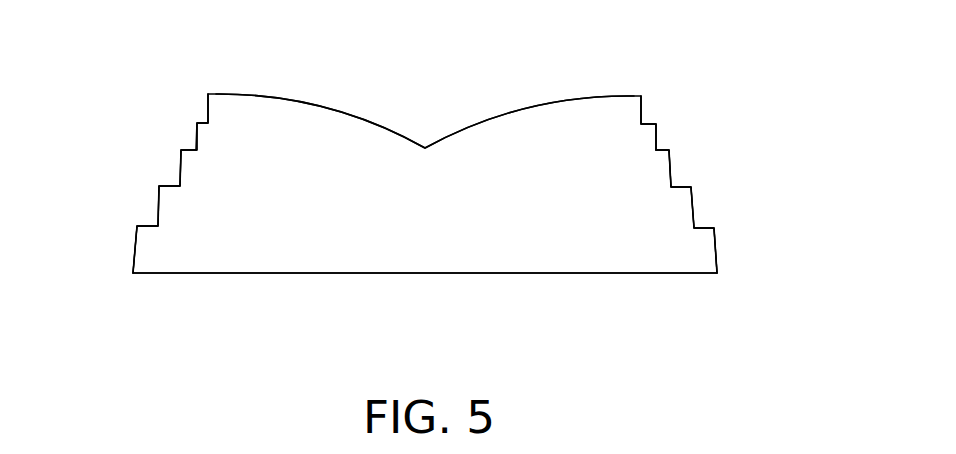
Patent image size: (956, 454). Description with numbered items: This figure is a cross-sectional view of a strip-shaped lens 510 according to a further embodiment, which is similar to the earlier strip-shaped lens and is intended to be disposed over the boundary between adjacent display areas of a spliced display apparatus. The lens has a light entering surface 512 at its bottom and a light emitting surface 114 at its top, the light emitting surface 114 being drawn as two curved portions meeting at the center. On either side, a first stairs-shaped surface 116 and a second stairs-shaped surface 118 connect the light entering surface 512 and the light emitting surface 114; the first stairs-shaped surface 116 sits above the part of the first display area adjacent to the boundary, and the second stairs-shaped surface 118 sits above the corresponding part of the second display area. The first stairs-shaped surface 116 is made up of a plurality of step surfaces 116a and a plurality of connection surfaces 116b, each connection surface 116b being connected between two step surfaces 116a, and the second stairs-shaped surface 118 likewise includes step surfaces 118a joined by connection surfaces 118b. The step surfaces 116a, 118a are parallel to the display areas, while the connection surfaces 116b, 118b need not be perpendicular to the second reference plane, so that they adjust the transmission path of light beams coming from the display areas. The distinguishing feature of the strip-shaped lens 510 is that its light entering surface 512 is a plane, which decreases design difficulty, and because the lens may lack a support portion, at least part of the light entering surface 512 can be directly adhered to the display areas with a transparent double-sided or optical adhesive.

The light emitting surface 114 is at (480, 121).
The first stairs-shaped surface 116 is at (97, 72).
The step surfaces 116a is at (203, 121).
The connection surfaces 116b is at (179, 165).
The second stairs-shaped surface 118 is at (752, 72).
The step surfaces 118a is at (647, 121).
The connection surfaces 118b is at (671, 165).
The strip-shaped lens 510 is at (752, 190).
The light entering surface 512 is at (431, 276).